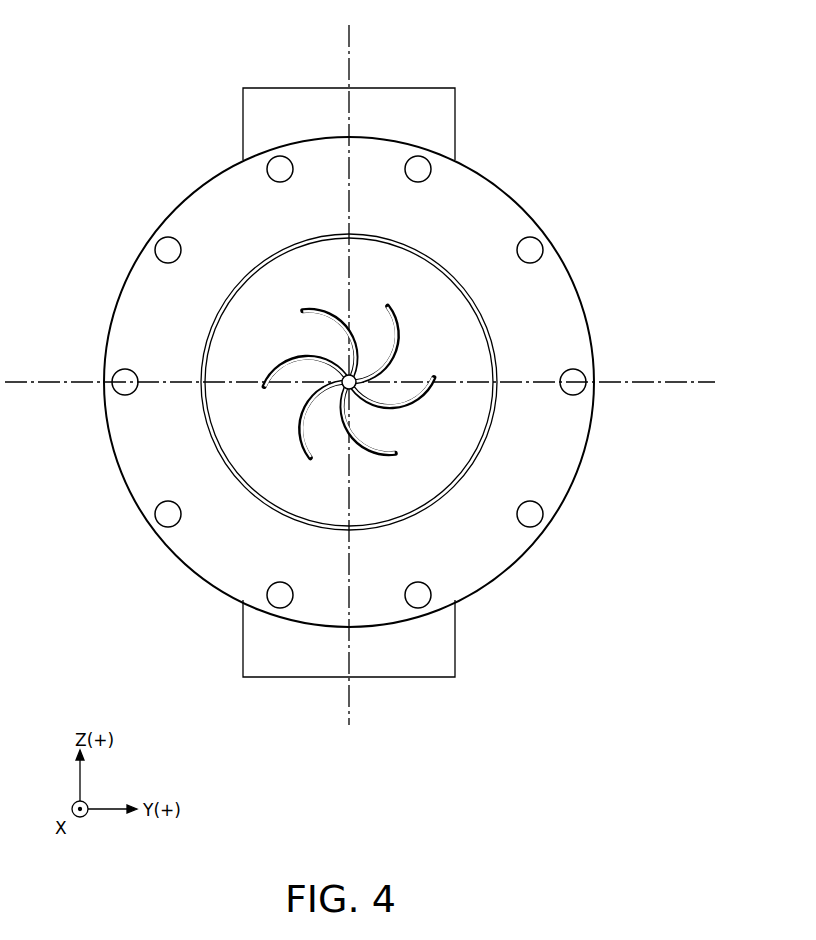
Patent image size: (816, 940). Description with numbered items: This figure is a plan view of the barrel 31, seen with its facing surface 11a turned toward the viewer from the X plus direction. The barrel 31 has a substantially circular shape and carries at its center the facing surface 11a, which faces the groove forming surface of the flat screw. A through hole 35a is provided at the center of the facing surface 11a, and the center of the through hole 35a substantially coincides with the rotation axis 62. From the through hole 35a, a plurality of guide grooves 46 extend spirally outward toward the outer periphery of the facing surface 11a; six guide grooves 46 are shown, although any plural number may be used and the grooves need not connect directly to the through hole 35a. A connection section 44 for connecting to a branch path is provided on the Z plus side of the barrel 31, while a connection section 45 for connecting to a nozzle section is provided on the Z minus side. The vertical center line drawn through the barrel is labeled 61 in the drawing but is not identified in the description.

The barrel 31 is at (165, 166).
The connection section 44 is at (455, 110).
The connection section 45 is at (455, 660).
The facing surface 11a is at (403, 270).
The guide grooves 46 is at (452, 495).
The through hole 35a is at (333, 516).
The rotation axis 62 is at (304, 395).
The rotation axis 61 is at (349, 45).